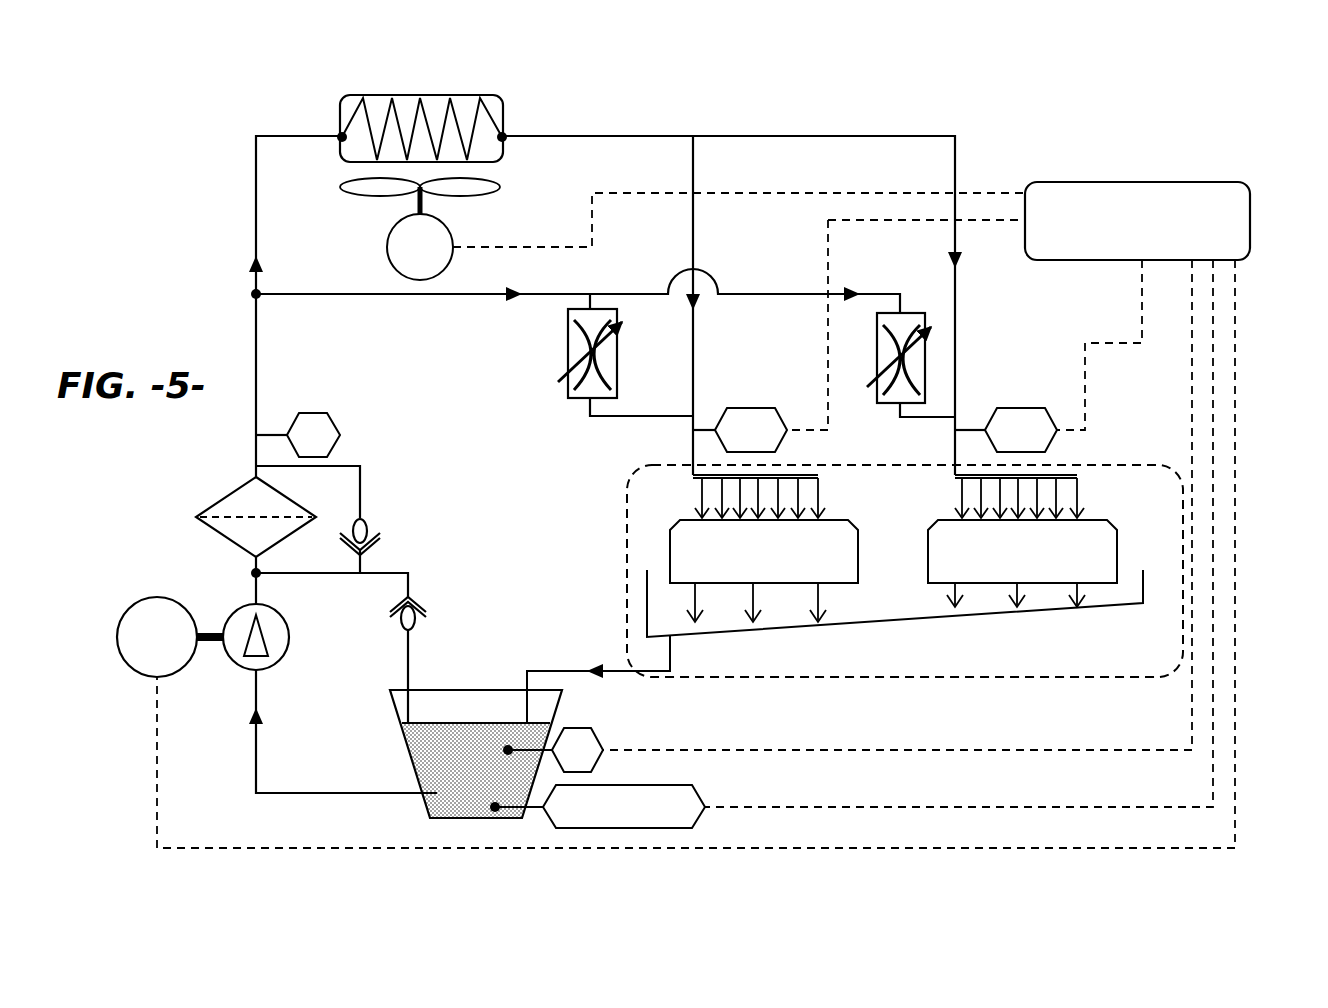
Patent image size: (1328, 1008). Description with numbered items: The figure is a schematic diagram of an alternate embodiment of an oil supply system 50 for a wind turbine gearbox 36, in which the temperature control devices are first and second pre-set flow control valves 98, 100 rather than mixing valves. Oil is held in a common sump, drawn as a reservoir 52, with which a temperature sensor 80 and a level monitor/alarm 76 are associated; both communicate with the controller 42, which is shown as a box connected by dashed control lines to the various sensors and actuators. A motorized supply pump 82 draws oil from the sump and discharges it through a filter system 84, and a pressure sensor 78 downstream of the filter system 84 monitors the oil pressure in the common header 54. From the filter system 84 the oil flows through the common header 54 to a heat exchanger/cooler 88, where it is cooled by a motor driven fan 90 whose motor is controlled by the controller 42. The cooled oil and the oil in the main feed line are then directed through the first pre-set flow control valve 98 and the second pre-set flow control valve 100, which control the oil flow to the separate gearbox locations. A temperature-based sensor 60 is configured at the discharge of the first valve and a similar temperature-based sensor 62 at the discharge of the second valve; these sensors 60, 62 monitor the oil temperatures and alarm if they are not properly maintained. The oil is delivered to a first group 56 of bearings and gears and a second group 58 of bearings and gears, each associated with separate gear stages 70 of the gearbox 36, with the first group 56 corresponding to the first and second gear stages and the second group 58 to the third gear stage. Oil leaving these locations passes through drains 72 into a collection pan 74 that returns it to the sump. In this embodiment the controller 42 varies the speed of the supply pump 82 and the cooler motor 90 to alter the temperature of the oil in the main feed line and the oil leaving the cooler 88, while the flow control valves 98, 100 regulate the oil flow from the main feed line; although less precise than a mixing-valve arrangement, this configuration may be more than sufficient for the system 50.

The wind turbine gearbox 36 is at (1155, 465).
The controller 42 is at (1048, 260).
The oil supply system 50 is at (1248, 320).
The lubricant reservoir 52 is at (428, 763).
The common header 54 is at (256, 313).
The first group of locations 56 is at (838, 516).
The second group of locations 58 is at (1122, 490).
The temperature-based sensor 60 is at (758, 408).
The temperature-based sensor 62 is at (1033, 408).
The gear stages 70 is at (682, 520).
The drains 72 is at (758, 603).
The collection pan 74 is at (858, 622).
The level monitor/alarm 76 is at (712, 798).
The pressure sensor 78 is at (342, 435).
The temperature sensor 80 is at (604, 743).
The motorized supply pump 82 is at (240, 670).
The filter system 84 is at (222, 495).
The common heat exchanger/cooler 88 is at (505, 145).
The motor driven fan 90 is at (388, 243).
The first pre-set flow control valve 98 is at (568, 350).
The second pre-set flow control valve 100 is at (880, 405).